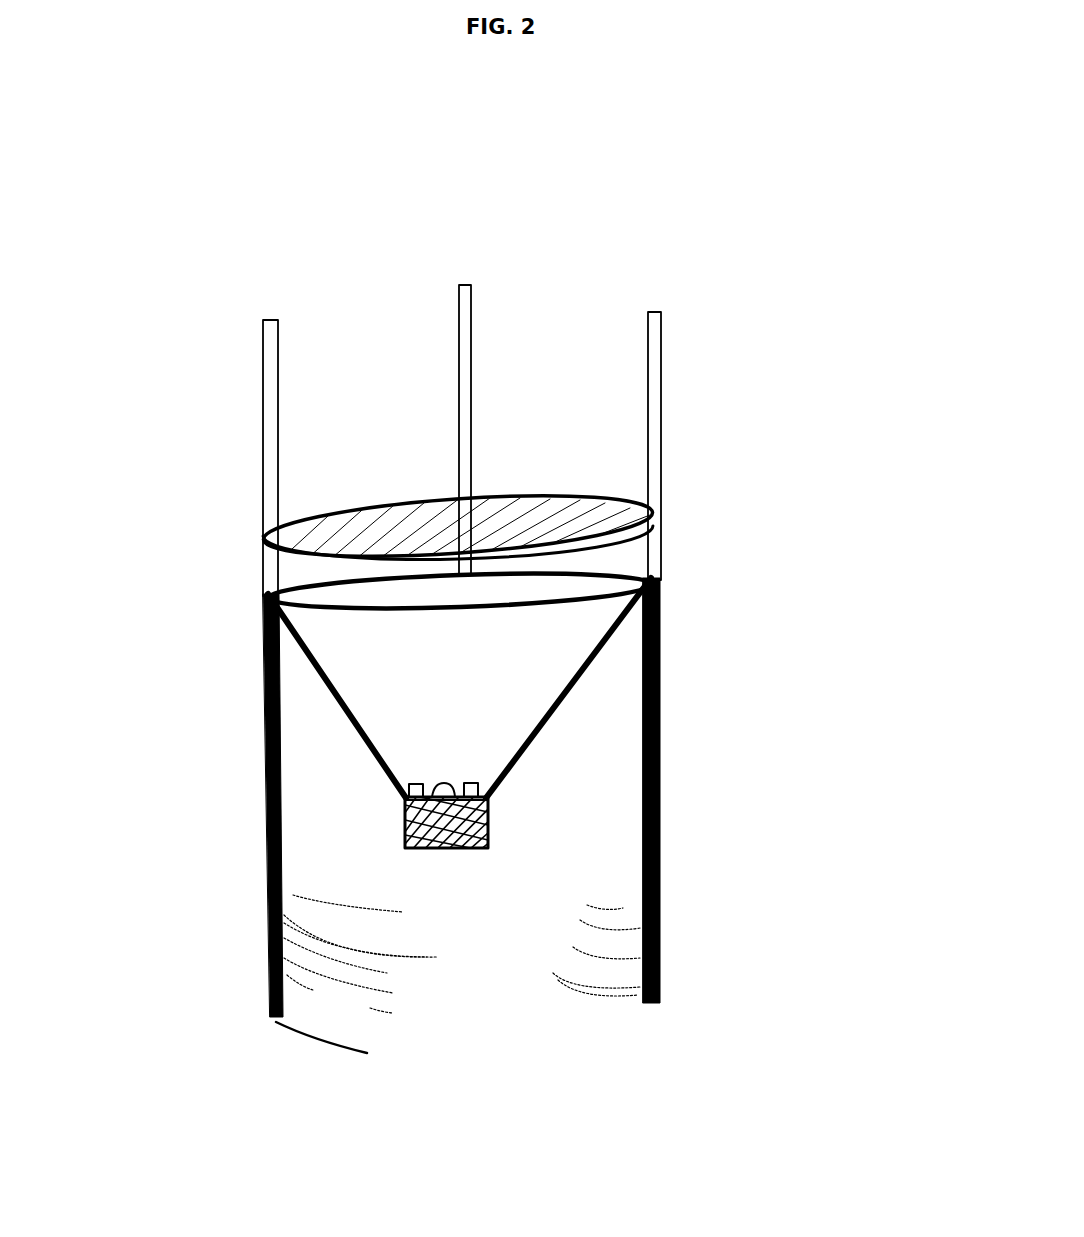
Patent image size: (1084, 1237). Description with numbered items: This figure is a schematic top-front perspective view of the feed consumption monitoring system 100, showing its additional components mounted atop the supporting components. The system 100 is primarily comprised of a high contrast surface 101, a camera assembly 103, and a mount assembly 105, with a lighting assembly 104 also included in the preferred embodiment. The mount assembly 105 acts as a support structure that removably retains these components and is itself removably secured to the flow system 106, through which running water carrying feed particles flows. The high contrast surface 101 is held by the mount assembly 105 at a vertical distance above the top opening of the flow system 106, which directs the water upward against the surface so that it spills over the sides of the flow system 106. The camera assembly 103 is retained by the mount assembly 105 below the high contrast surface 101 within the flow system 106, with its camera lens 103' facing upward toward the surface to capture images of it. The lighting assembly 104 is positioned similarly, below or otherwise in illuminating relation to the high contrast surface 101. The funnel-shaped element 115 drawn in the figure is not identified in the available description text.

The feed consumption monitoring system 100 is at (822, 348).
The high contrast surface 101 is at (515, 497).
The camera assembly 103 is at (607, 824).
The camera lens 103' is at (274, 874).
The lighting assembly 104 is at (480, 767).
The mount assembly 105 is at (265, 434).
The flow system 106 is at (660, 961).
The funnel 115 is at (318, 673).